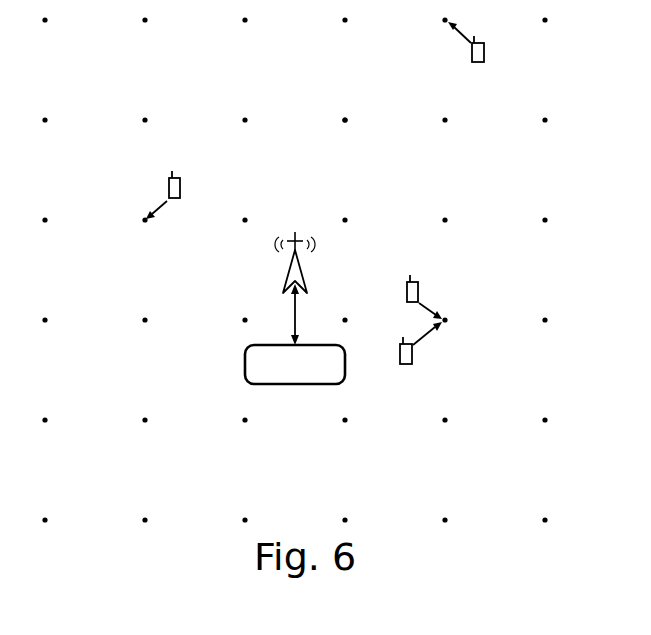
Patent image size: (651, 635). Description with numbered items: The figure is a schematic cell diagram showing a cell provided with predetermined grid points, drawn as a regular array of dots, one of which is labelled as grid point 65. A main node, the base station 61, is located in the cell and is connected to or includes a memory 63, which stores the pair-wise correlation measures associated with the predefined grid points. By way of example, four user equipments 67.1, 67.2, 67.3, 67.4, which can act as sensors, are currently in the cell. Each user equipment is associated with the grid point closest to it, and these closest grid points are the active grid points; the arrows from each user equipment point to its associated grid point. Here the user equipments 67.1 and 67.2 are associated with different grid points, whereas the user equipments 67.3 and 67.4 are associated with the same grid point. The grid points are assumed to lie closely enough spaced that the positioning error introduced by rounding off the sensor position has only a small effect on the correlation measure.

The base station 61 is at (288, 272).
The memory 63 is at (245, 366).
The grid point 65 is at (344, 122).
The user equipment 67.1 is at (169, 190).
The user equipment 67.2 is at (472, 53).
The user equipment 67.3 is at (420, 290).
The user equipment 67.4 is at (414, 353).